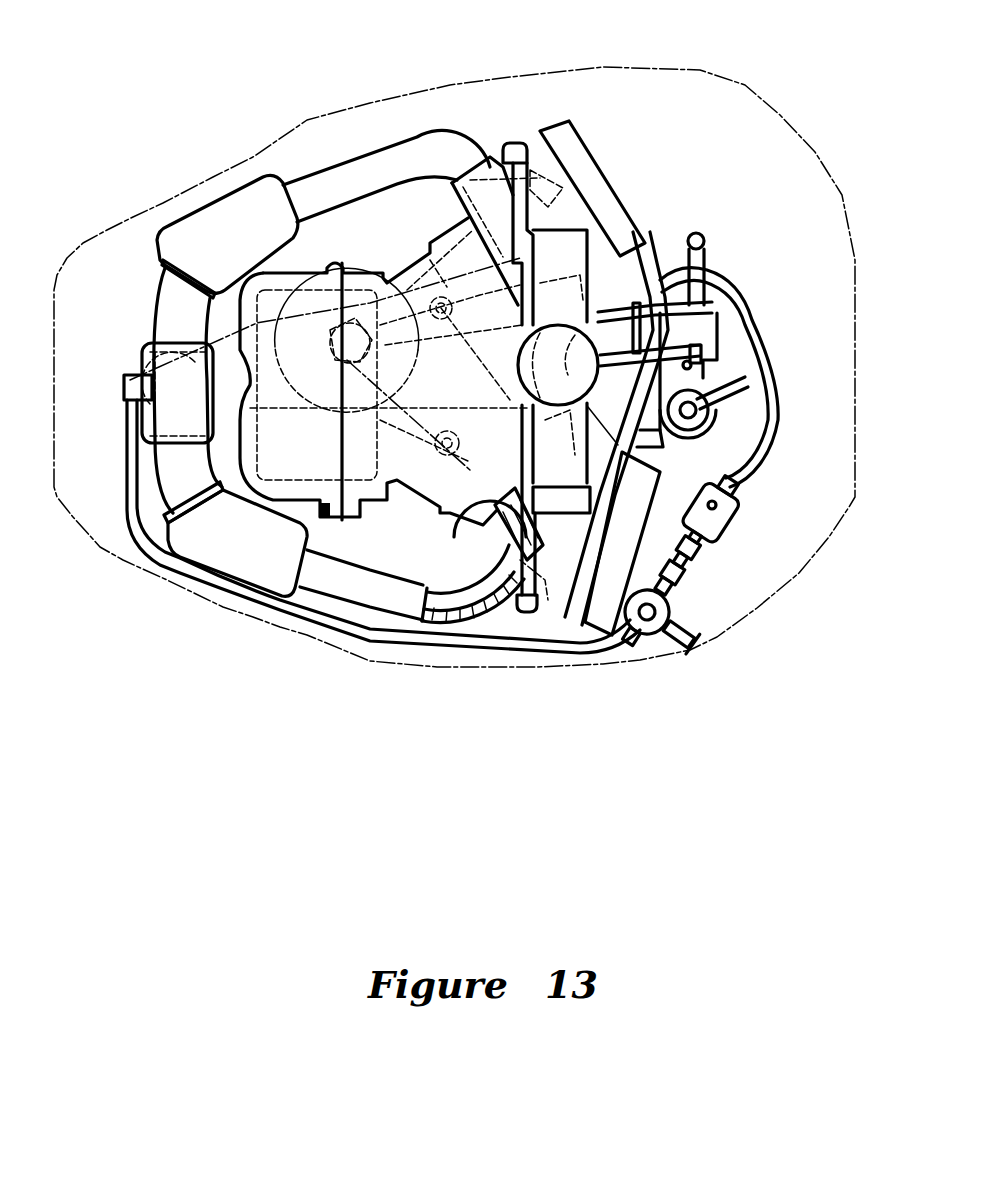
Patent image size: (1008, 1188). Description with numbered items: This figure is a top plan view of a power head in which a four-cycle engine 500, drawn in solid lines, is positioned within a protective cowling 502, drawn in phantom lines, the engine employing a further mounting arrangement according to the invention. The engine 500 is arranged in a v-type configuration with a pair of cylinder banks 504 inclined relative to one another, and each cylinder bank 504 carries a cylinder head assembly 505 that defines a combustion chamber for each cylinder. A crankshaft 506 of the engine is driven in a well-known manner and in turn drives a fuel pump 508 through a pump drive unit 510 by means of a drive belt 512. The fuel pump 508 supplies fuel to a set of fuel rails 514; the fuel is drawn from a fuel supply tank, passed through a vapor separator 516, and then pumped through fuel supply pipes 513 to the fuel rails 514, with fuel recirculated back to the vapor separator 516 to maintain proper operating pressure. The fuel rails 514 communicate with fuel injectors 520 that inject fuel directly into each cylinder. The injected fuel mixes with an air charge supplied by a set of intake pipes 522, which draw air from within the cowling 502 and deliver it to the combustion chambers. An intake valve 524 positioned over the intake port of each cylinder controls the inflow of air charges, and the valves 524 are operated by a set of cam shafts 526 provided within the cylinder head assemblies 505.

The engine 500 is at (659, 184).
The cowling 502 is at (830, 177).
The cylinder banks 504 is at (398, 268).
The cylinder head assembly 505 is at (590, 630).
The crankshaft 506 is at (252, 300).
The fuel pump 508 is at (570, 505).
The pump drive unit 510 is at (567, 347).
The drive belt 512 is at (423, 263).
The fuel supply pipes 513 is at (583, 147).
The fuel rails 514 is at (513, 143).
The vapor separator 516 is at (708, 330).
The fuel injectors 520 is at (483, 627).
The intake pipes 522 is at (338, 173).
The intake valve 524 is at (463, 520).
The cam shafts 526 is at (543, 640).